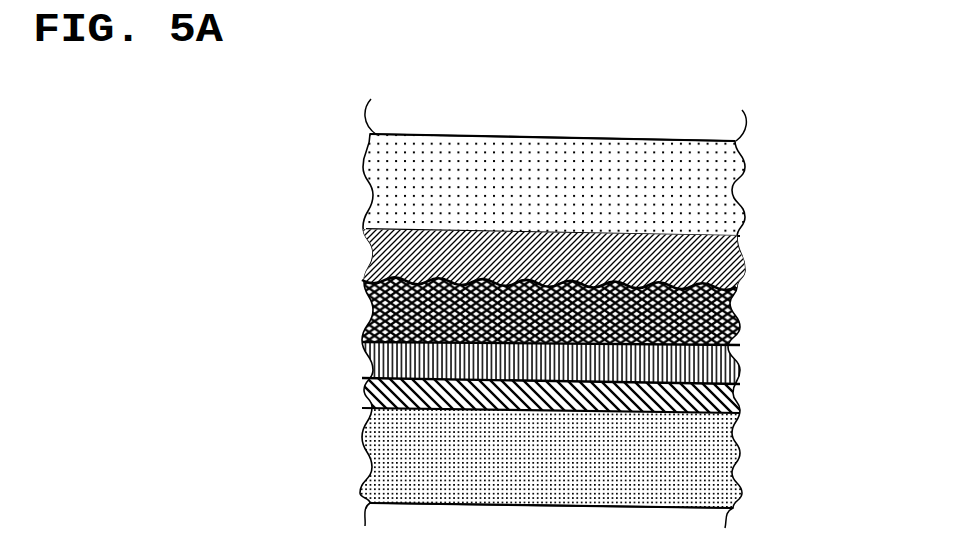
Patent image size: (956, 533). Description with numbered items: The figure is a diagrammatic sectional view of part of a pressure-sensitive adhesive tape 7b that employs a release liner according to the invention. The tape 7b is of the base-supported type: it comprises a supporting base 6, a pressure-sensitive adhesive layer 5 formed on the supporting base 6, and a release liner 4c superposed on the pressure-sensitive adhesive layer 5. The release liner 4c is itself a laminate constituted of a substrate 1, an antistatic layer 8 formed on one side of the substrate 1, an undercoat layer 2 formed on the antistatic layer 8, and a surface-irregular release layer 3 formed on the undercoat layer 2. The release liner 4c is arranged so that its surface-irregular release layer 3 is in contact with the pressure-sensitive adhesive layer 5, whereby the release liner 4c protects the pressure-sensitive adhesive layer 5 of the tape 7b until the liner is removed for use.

The substrate 1 is at (728, 467).
The undercoat layer 2 is at (735, 363).
The surface-irregular release layer 3 is at (732, 304).
The release liner 4c is at (852, 287).
The pressure-sensitive adhesive layer 5 is at (734, 262).
The supporting base 6 is at (517, 158).
The pressure-sensitive adhesive tape 7b is at (640, 115).
The antistatic layer 8 is at (728, 402).